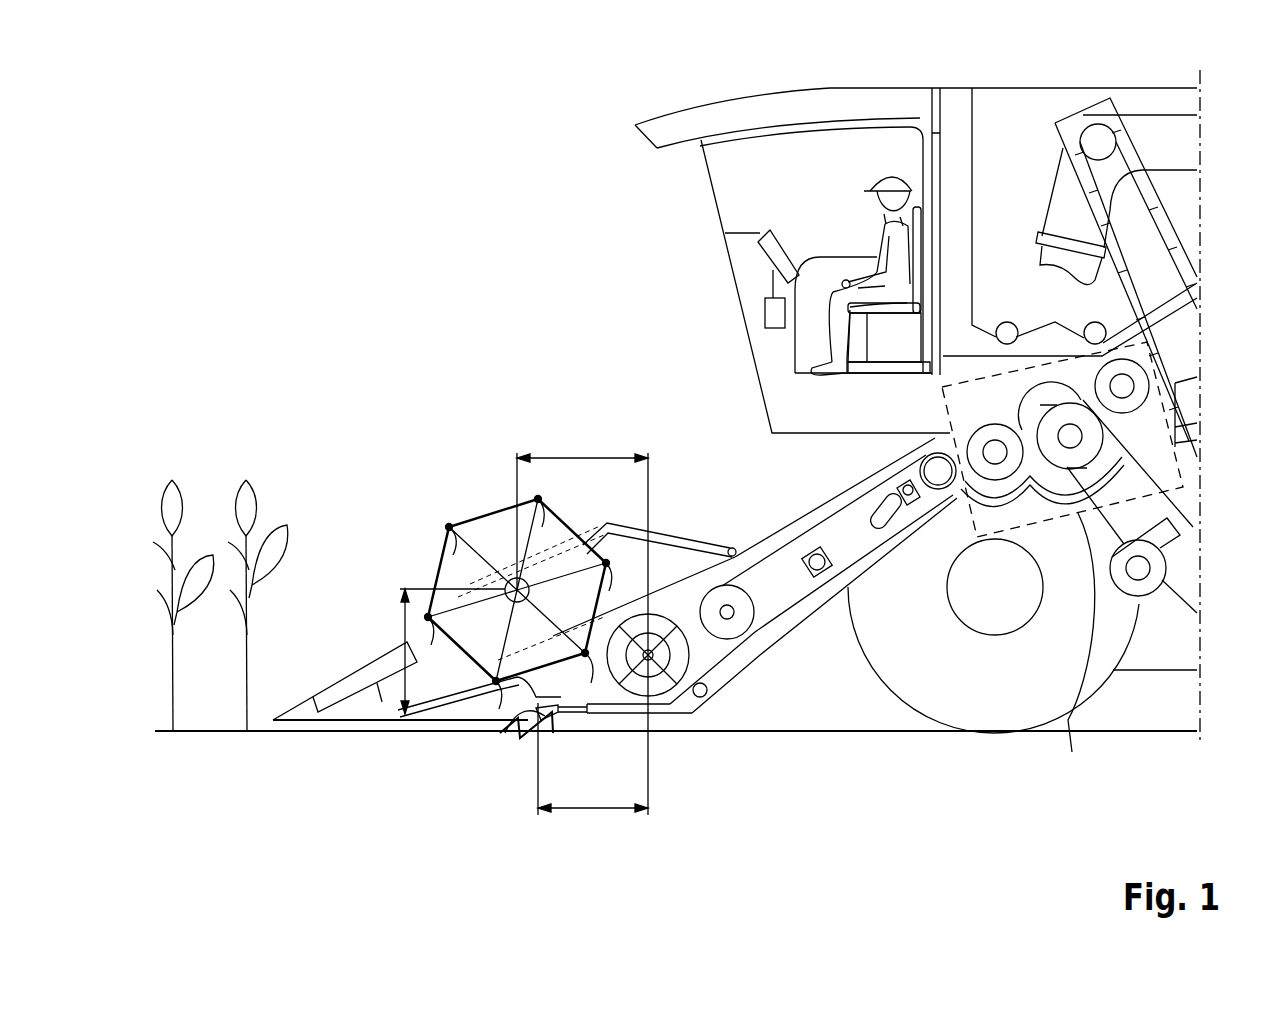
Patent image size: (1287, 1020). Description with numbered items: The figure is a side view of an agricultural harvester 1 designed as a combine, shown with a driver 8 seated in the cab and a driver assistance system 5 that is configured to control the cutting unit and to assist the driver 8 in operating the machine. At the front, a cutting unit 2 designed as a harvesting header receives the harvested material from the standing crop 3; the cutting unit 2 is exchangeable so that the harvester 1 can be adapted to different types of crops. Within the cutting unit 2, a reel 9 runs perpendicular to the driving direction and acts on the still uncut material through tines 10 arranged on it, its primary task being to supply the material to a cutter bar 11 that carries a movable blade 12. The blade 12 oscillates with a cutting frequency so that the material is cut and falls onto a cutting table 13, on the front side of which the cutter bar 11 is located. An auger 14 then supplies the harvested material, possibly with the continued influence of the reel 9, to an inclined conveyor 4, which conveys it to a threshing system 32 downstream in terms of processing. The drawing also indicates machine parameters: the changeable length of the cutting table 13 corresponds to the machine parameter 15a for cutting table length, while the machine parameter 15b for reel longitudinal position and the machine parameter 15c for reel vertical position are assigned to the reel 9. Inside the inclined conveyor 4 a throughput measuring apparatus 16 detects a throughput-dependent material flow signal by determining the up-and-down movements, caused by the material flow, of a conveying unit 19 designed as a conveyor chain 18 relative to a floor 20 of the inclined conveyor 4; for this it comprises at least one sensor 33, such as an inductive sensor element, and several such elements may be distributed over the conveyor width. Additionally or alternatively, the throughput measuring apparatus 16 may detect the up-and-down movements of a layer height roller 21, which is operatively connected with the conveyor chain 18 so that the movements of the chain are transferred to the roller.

The agricultural harvester 1 is at (820, 86).
The cutting unit 2 is at (402, 425).
The crop 3 is at (193, 449).
The inclined conveyor 4 is at (767, 538).
The driver assistance system 5 is at (764, 313).
The driver 8 is at (893, 178).
The reel 9 is at (490, 510).
The tines 10 is at (440, 547).
The cutter bar 11 is at (503, 735).
The movable blade 12 is at (540, 720).
The cutting table 13 is at (613, 714).
The auger 14 is at (673, 615).
The machine parameter "cutting table length" 15a is at (597, 814).
The machine parameter "reel longitudinal position" 15b is at (582, 453).
The machine parameter "reel vertical position" 15c is at (400, 622).
The throughput measuring apparatus 16 is at (876, 502).
The conveyor chain 18 is at (811, 622).
The conveying unit 19 is at (775, 617).
The floor 20 is at (837, 578).
The layer height roller 21 is at (890, 523).
The threshing system 32 is at (1073, 750).
The sensor 33 is at (816, 558).